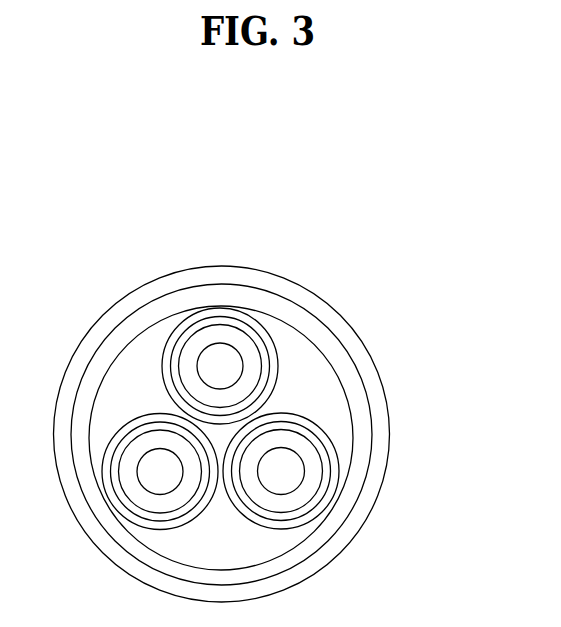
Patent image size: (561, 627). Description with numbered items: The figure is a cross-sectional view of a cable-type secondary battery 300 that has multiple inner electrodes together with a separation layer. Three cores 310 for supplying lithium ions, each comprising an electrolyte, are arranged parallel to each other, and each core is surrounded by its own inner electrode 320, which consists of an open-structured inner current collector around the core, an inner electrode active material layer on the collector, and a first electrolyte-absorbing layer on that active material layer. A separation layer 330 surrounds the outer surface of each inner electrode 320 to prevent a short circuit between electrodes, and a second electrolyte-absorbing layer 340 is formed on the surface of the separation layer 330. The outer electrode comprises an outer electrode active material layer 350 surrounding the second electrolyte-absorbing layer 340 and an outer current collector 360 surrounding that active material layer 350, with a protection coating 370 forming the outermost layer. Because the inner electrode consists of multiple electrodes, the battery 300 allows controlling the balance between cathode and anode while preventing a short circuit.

The cable-type secondary battery 300 is at (356, 261).
The core for supplying lithium ions 310 is at (216, 356).
The inner electrode 320 is at (236, 332).
The separation layer 330 is at (256, 337).
The second electrolyte-absorbing layer 340 is at (273, 345).
The outer electrode active material layer 350 is at (320, 363).
The outer current collector 360 is at (353, 378).
The protection coating 370 is at (378, 401).